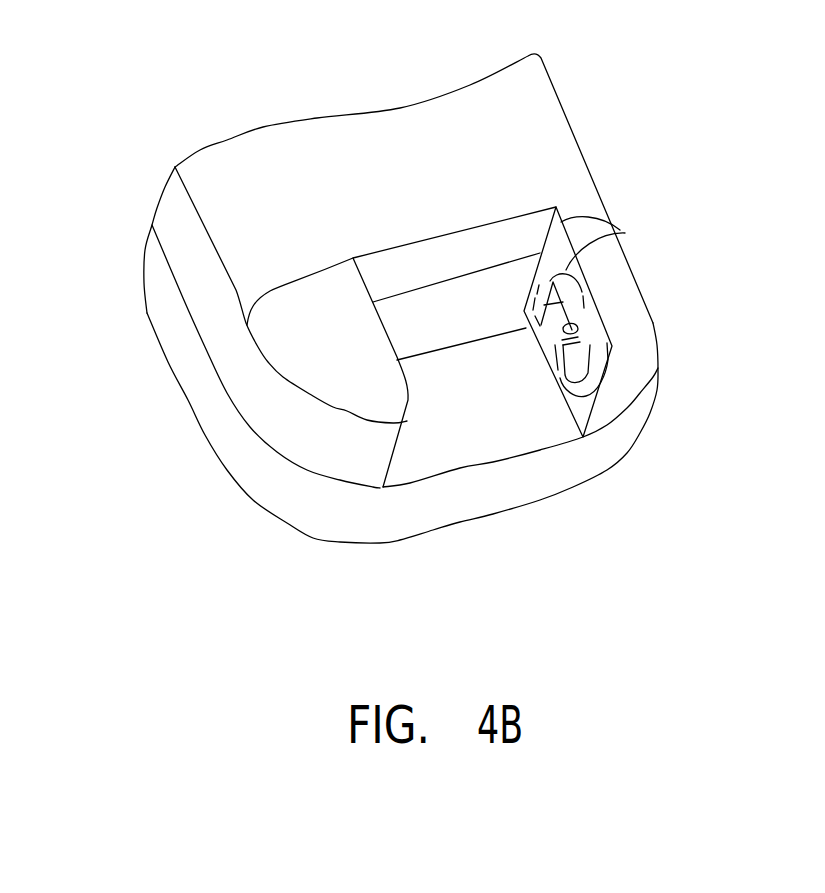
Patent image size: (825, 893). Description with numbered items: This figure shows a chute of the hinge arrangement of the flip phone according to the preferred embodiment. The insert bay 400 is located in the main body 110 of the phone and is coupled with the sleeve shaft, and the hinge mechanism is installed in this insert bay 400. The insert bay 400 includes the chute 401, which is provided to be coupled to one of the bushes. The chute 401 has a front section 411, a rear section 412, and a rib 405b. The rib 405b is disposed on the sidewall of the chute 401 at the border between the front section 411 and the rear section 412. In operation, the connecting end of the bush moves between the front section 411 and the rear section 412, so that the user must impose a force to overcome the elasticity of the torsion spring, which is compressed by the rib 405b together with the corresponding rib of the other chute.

The main body 110 is at (525, 138).
The insert bay 400 is at (440, 405).
The chute 401 is at (559, 339).
The front section 411 is at (625, 233).
The rib 405b is at (566, 331).
The rear section 412 is at (565, 383).